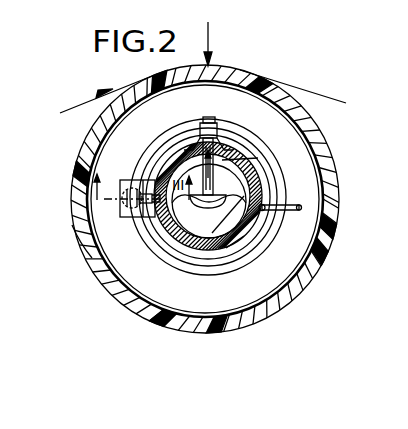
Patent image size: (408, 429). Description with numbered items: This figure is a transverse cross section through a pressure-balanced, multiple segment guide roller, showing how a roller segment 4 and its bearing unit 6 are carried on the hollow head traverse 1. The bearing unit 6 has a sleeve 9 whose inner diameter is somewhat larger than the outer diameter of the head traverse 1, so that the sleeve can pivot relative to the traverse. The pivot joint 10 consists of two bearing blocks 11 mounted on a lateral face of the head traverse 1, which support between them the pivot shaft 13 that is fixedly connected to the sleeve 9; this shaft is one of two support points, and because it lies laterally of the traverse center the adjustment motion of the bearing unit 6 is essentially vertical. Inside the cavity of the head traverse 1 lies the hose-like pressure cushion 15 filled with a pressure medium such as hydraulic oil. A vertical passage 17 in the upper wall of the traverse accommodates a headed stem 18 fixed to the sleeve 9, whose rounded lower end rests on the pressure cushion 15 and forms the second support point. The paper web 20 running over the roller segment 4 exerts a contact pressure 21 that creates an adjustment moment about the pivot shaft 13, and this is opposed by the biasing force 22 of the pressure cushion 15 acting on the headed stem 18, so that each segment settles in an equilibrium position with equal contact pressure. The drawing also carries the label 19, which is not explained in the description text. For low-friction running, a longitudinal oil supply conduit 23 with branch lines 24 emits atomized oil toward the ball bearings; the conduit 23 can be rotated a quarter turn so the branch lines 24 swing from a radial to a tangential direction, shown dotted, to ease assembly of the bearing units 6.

The head traverse 1 is at (233, 310).
The roller segment 4 is at (77, 228).
The bearing unit 6 is at (198, 116).
The sleeve 9 is at (222, 133).
The pivot joint 10 is at (131, 176).
The bearing block 11 is at (122, 213).
The pivot shaft 13 is at (137, 218).
The pressure cushion 15 is at (272, 201).
The vertical passage 17 is at (222, 126).
The headed stem 18 is at (257, 178).
The chamber 19 is at (236, 240).
The paper web 20 is at (77, 105).
The contact pressure 21 is at (210, 36).
The biasing force 22 is at (198, 148).
The oil supply conduit 23 is at (268, 214).
The branch line 24 is at (326, 228).